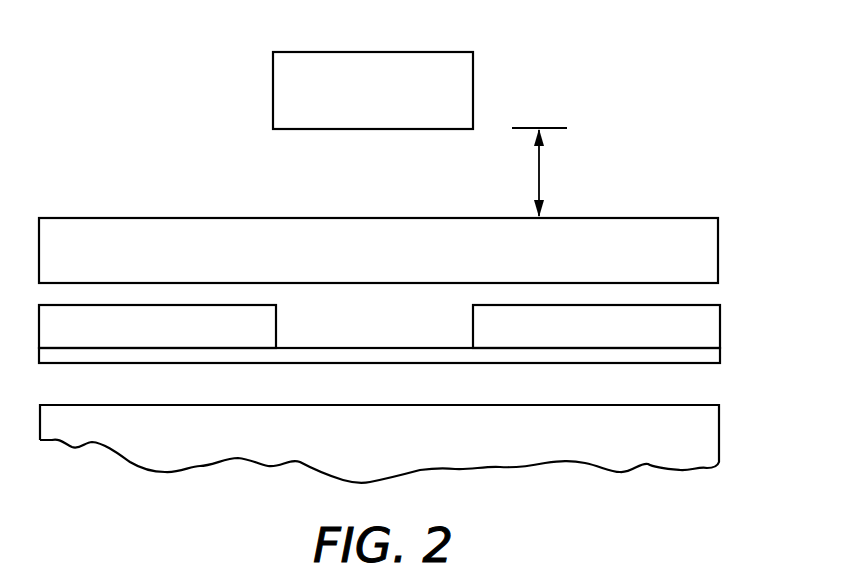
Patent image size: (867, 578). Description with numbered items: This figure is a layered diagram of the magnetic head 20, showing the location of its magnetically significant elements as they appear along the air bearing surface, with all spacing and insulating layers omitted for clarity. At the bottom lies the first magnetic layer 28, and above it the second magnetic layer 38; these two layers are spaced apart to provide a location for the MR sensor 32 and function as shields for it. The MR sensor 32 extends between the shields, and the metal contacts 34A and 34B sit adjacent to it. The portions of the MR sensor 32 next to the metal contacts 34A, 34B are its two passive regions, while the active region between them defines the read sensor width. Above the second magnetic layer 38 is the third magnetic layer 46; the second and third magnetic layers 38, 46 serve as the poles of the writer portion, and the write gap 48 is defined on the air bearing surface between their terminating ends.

The magnetic head 20 is at (645, 159).
The first magnetic layer 28 is at (396, 450).
The magnetoresistive (MR) sensor 32 is at (697, 358).
The metal contact 34A is at (138, 337).
The metal contact 34B is at (574, 337).
The second magnetic layer 38 is at (396, 259).
The third magnetic layer 46 is at (393, 98).
The write gap 48 is at (539, 172).